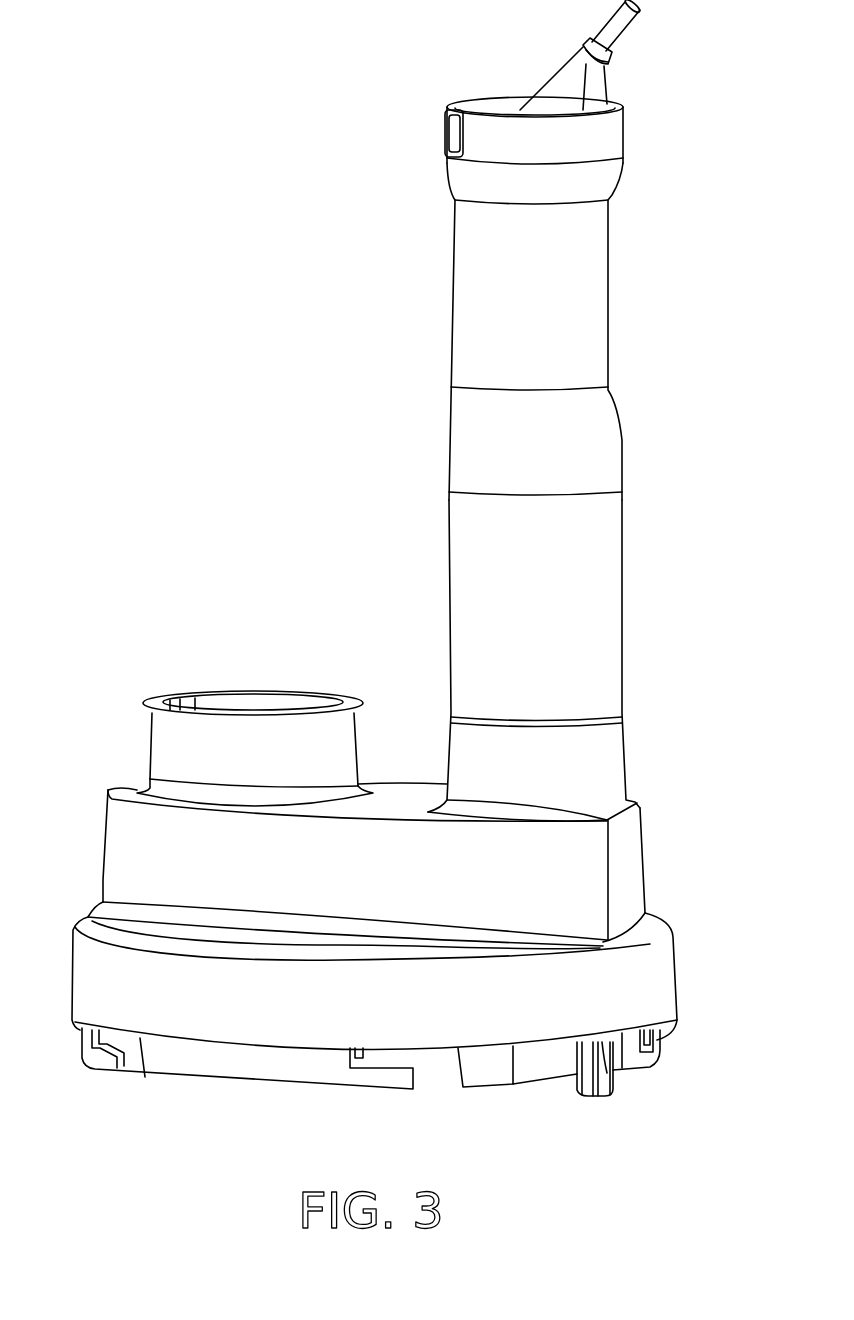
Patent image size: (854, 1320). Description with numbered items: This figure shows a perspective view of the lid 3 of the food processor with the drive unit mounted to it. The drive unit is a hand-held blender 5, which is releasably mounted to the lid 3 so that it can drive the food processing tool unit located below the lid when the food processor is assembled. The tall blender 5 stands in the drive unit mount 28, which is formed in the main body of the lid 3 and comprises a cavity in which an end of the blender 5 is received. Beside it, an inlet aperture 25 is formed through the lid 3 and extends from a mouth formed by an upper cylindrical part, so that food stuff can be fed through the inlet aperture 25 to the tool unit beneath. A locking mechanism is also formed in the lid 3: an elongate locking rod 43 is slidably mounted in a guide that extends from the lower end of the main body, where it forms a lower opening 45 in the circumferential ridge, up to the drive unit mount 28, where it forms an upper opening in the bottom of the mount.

The hand-held blender 5 is at (602, 463).
The drive unit mount 28 is at (627, 745).
The inlet aperture 25 is at (260, 700).
The lid 3 is at (630, 858).
The lower opening 45 is at (613, 1082).
The locking rod 43 is at (603, 1088).